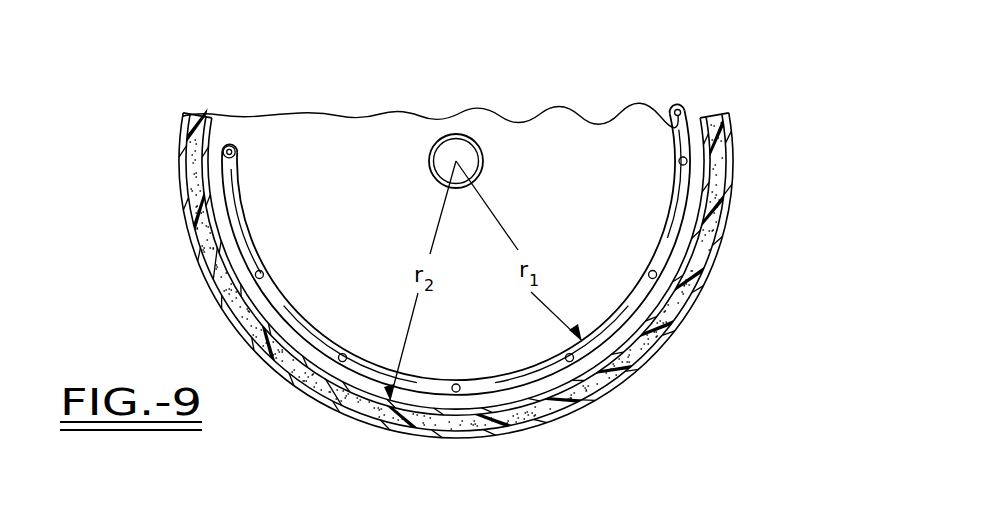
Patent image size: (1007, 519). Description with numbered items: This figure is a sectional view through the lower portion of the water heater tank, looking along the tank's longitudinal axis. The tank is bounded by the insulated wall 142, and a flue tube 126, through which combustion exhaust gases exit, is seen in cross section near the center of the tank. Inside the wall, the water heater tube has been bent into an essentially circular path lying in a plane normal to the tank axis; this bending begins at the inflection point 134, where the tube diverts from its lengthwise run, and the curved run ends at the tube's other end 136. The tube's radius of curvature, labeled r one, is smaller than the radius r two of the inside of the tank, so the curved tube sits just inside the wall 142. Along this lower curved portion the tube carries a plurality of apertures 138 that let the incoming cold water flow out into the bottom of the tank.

The flue tube 126 is at (456, 148).
The inflection point 134 is at (230, 145).
The second end of tube 136 is at (688, 107).
The apertures 138 is at (688, 160).
The insulated wall 142 is at (686, 318).